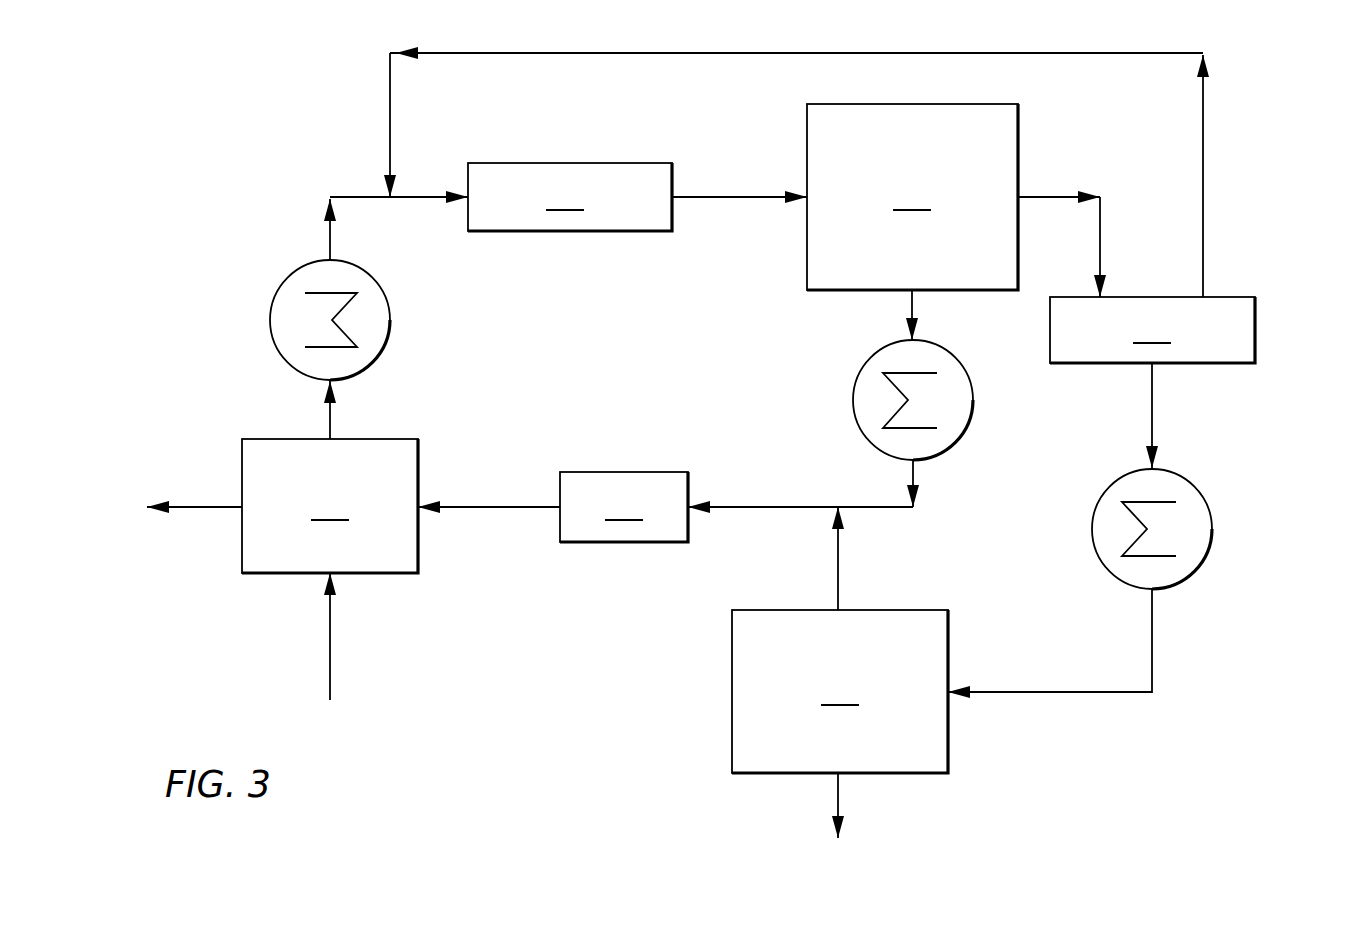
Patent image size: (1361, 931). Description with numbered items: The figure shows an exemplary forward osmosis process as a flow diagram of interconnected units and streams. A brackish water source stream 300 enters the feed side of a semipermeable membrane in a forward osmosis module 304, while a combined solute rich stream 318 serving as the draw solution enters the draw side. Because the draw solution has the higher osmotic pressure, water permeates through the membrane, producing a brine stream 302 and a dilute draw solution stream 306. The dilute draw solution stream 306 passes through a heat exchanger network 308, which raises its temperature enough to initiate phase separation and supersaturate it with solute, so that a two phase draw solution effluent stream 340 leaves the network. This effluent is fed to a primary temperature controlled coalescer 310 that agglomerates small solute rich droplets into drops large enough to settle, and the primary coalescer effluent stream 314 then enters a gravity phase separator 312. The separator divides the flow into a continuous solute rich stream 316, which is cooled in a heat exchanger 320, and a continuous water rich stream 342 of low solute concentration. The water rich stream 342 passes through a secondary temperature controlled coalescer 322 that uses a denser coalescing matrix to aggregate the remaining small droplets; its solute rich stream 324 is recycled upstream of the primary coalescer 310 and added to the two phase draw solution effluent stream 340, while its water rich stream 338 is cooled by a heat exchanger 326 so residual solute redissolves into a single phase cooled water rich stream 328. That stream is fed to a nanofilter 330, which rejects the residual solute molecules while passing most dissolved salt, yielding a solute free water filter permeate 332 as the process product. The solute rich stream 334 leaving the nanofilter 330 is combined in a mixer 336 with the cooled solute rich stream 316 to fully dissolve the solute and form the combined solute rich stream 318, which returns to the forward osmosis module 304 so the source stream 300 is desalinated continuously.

The brackish water source stream 300 is at (330, 650).
The brine stream 302 is at (208, 508).
The forward osmosis module 304 is at (330, 506).
The dilute draw solution stream 306 is at (330, 418).
The heat exchanger network 308 is at (270, 320).
The primary temperature controlled coalescer 310 is at (570, 197).
The gravity phase separator 312 is at (912, 197).
The primary coalescer effluent stream 314 is at (737, 197).
The solute rich stream 316 is at (912, 302).
The combined solute rich stream 318 is at (497, 510).
The heat exchanger 320 is at (853, 400).
The secondary temperature controlled coalescer 322 is at (1152, 330).
The solute rich stream 324 is at (1203, 237).
The heat exchanger 326 is at (1212, 545).
The single phase cooled water rich stream 328 is at (1065, 693).
The nanofilter 330 is at (840, 691).
The solute free water filter permeate 332 is at (838, 793).
The solute rich stream 334 is at (838, 575).
The mixer 336 is at (624, 507).
The water rich stream 338 is at (1153, 403).
The two phase draw solution effluent stream 340 is at (328, 240).
The water rich stream 342 is at (1053, 195).